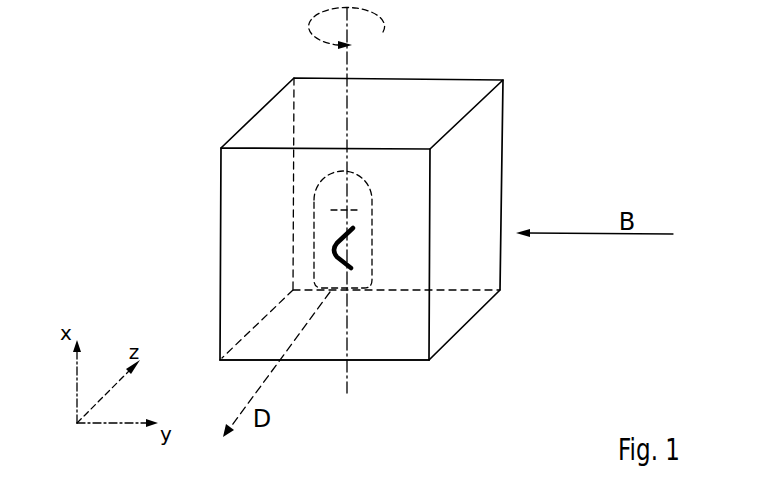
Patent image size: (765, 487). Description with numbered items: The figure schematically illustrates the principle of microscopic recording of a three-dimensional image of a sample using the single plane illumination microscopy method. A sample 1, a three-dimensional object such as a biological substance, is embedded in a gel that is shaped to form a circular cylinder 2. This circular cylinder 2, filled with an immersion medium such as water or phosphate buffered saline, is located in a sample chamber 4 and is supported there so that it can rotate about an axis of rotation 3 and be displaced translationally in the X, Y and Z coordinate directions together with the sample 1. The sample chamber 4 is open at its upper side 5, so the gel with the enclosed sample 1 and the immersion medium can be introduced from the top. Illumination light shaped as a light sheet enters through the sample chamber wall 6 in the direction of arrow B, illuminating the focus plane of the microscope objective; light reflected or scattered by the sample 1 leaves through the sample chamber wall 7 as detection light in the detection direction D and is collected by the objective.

The sample 1 is at (333, 257).
The circular cylinder 2 is at (313, 220).
The axis of rotation 3 is at (345, 72).
The sample chamber 4 is at (236, 107).
The upper side 5 is at (397, 105).
The sample chamber wall 6 is at (478, 175).
The sample chamber wall 7 is at (380, 365).